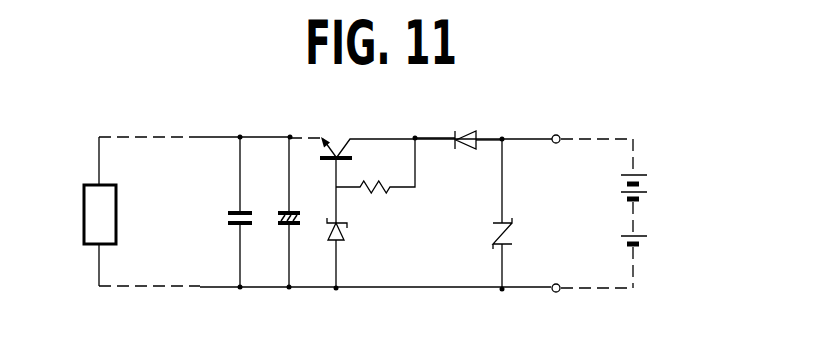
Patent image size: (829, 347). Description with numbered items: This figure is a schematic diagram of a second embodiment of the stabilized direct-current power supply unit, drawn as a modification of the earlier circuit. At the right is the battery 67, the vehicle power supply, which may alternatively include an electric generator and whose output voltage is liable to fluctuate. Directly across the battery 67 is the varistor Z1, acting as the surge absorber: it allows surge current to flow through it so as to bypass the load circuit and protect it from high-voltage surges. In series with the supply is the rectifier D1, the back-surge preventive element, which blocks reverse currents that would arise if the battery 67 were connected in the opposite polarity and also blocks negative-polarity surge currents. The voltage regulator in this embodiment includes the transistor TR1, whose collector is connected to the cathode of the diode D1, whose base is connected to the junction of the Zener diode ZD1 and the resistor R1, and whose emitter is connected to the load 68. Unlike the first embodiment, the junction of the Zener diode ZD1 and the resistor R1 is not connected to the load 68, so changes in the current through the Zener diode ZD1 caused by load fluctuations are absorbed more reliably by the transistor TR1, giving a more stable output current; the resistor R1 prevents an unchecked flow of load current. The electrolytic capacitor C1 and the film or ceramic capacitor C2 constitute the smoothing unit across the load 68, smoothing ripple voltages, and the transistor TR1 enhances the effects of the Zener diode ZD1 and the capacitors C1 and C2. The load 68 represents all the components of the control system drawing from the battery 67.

The load 68 is at (83, 197).
The battery 67 is at (647, 186).
The transistor TR1 is at (339, 137).
The rectifier D1 is at (478, 134).
The Zener diode ZD1 is at (348, 229).
The varistor Z1 is at (514, 237).
The resistor R1 is at (368, 192).
The electrolytic capacitor C1 is at (285, 212).
The film or ceramic capacitor C2 is at (236, 212).